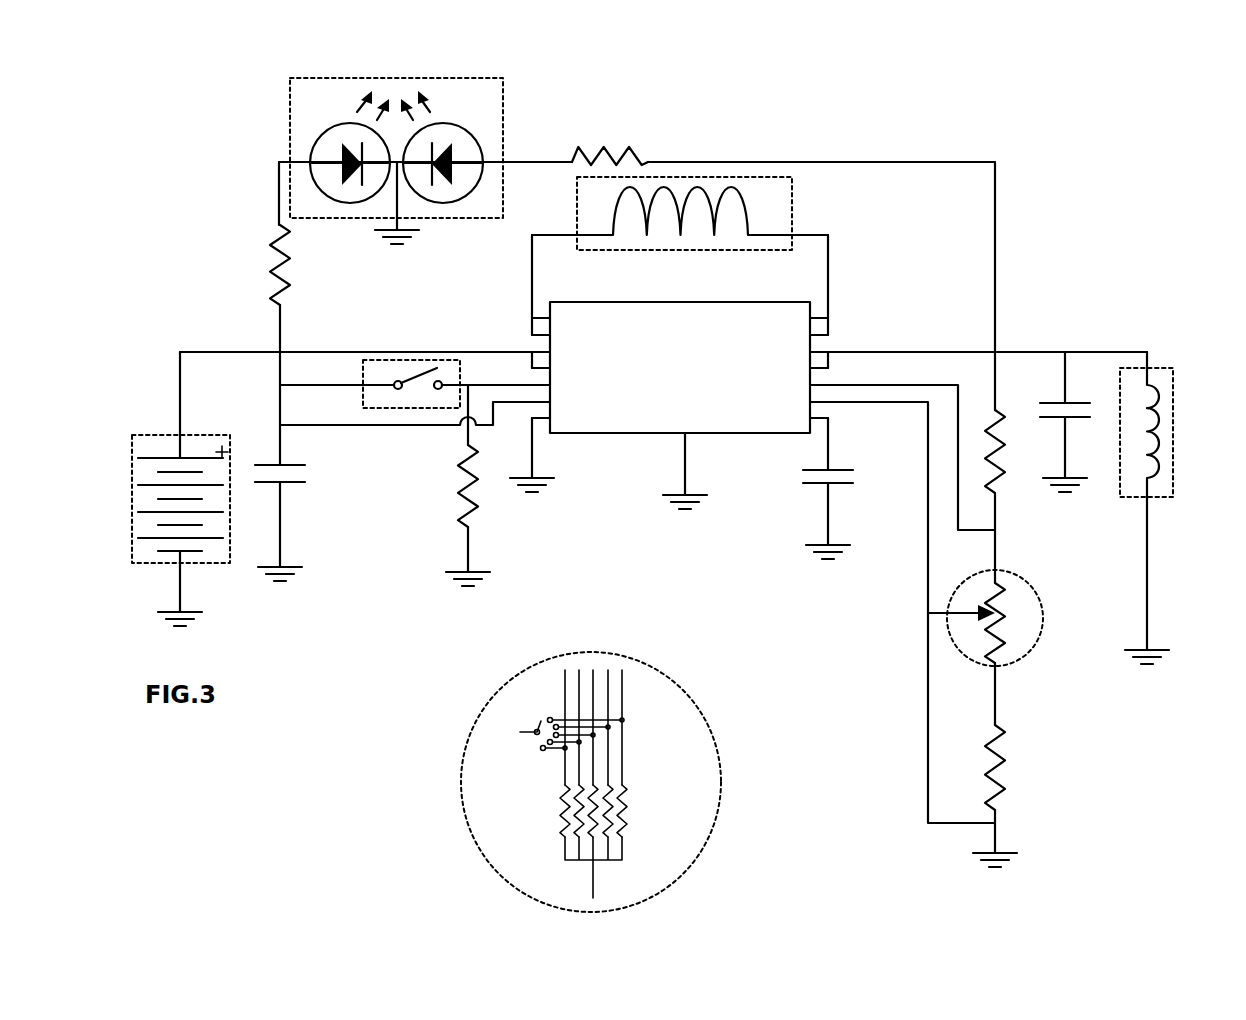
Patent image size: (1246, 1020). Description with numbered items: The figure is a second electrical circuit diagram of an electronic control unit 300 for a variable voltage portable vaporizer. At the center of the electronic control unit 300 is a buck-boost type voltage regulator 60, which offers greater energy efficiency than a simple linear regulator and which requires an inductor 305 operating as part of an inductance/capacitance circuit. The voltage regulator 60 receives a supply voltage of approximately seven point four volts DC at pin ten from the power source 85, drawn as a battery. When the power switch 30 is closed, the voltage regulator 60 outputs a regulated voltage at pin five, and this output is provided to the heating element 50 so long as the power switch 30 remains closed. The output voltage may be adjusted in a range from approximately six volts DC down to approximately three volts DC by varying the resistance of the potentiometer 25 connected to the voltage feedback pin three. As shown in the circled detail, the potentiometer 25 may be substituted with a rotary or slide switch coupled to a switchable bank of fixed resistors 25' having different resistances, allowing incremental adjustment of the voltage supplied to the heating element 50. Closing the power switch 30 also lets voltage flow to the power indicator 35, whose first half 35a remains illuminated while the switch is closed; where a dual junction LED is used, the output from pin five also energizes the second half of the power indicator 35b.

The electronic control unit 300 is at (157, 78).
The power indicator 35 is at (497, 213).
The first half of power indicator 35a is at (364, 203).
The second half of power indicator 35b is at (434, 203).
The inductor 305 is at (793, 215).
The buck-boost type voltage regulator U1 60 is at (770, 428).
The power source 85 is at (203, 564).
The power switch 30 is at (403, 360).
The potentiometer 25 is at (1013, 631).
The switchable bank of fixed resistors 25' is at (612, 782).
The heating element 50 is at (1163, 498).